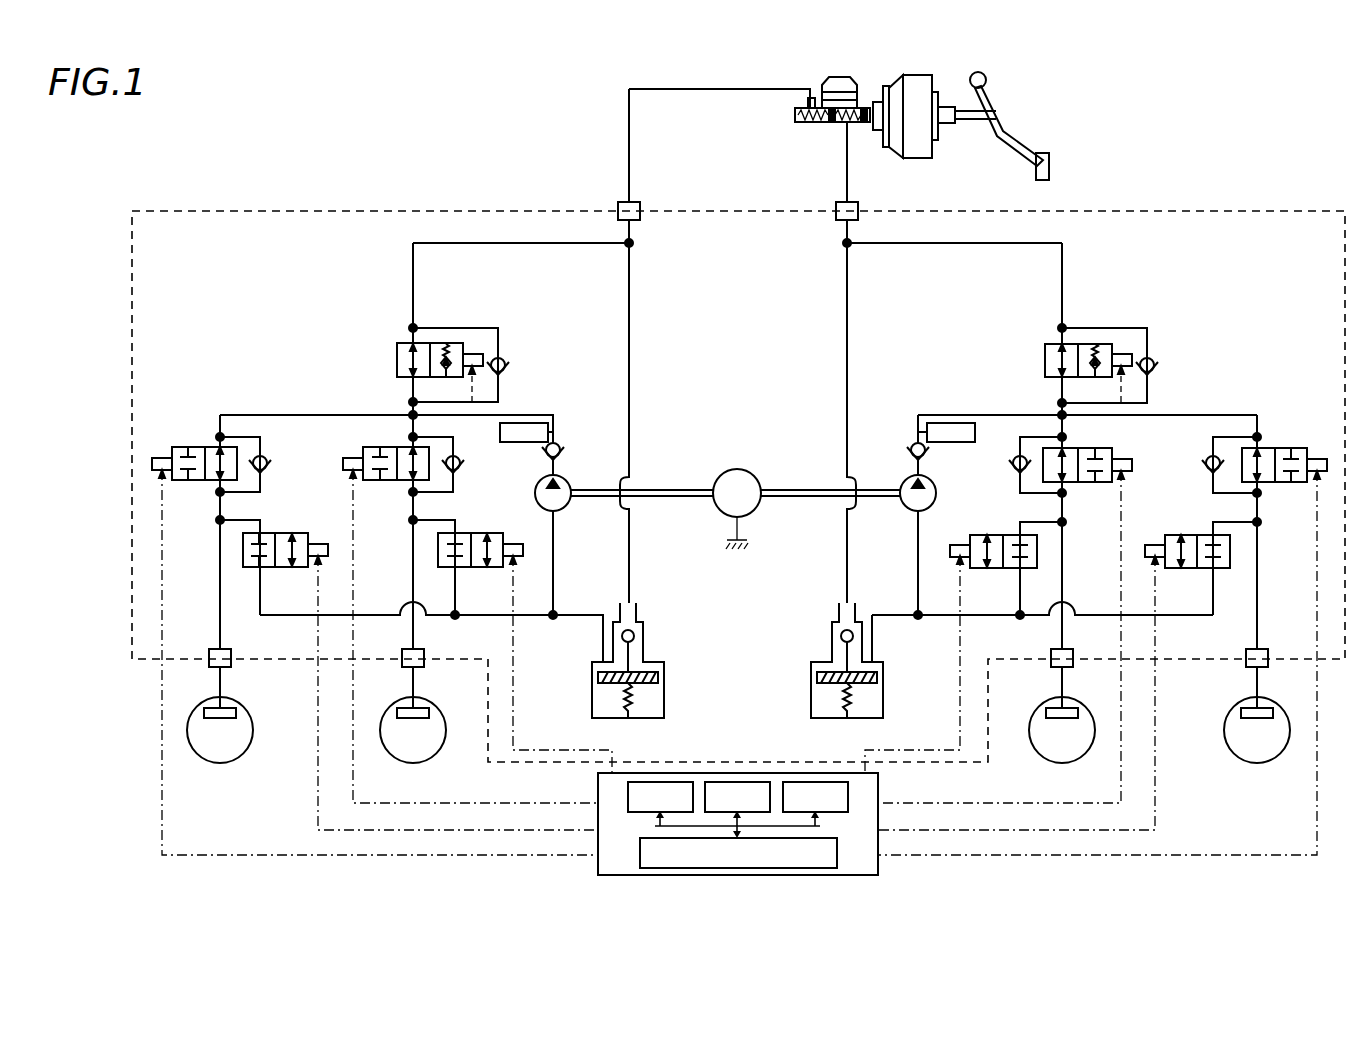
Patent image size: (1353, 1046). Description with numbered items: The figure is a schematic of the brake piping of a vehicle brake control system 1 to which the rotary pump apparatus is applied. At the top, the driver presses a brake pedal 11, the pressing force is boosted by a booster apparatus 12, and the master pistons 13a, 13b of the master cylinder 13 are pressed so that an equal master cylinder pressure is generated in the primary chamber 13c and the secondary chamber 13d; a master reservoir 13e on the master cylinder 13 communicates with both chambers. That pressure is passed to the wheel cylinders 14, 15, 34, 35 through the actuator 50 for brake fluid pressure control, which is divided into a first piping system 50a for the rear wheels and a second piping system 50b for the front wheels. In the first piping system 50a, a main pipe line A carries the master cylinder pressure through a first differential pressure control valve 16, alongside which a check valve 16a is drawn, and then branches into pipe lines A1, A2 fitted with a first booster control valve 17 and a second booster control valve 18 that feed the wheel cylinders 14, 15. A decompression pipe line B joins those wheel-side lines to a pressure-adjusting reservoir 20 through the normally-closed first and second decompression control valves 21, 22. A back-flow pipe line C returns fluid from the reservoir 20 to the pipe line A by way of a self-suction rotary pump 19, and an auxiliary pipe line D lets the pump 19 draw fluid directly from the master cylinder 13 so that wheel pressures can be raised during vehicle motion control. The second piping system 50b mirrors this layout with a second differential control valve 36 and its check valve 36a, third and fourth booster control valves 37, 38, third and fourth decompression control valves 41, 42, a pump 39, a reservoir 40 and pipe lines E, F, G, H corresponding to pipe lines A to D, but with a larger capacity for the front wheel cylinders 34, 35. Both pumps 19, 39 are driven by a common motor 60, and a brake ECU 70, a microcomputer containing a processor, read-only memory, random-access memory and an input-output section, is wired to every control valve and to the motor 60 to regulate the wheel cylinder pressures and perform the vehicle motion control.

The brake control system 1 is at (1113, 103).
The brake pedal 11 is at (995, 105).
The booster apparatus 12 is at (925, 75).
The master cylinder 13 is at (821, 123).
The master piston 13a is at (832, 124).
The master piston 13b is at (868, 124).
The primary chamber 13c is at (800, 124).
The secondary chamber 13d is at (850, 124).
The master reservoir 13e is at (840, 77).
The wheel cylinder 14 is at (204, 714).
The wheel cylinder 15 is at (397, 714).
The first differential pressure control valve 16 is at (446, 359).
The check valve 16a is at (506, 357).
The first booster control valve 17 is at (212, 447).
The second booster control valve 18 is at (400, 447).
The self-suction rotary pump 19 is at (537, 493).
The pressure-adjusting reservoir 20 is at (592, 705).
The first decompression control valve 21 is at (272, 533).
The second decompression control valve 22 is at (462, 533).
The wheel cylinder 34 is at (1273, 714).
The wheel cylinder 35 is at (1078, 714).
The second differential control valve 36 is at (1101, 365).
The check valve 36a is at (1155, 362).
The third booster control valve 37 is at (1260, 448).
The fourth booster control valve 38 is at (1070, 448).
The pump 39 is at (936, 493).
The reservoir 40 is at (884, 705).
The third decompression control valve 41 is at (1203, 535).
The fourth decompression control valve 42 is at (1012, 535).
The actuator for brake fluid pressure control 50 is at (1340, 210).
The first piping system 50a is at (205, 262).
The second piping system 50b is at (1272, 262).
The motor 60 is at (737, 468).
The brake ECU 70 is at (878, 783).
The pipe line A is at (413, 245).
The pipe line A1 is at (218, 589).
The pipe line A2 is at (412, 582).
The pipe line B is at (466, 617).
The pipe line C is at (522, 414).
The pipe line D is at (629, 268).
The pipe line E is at (1062, 245).
The pipe line F is at (1005, 617).
The pipe line G is at (955, 414).
The pipe line H is at (847, 268).